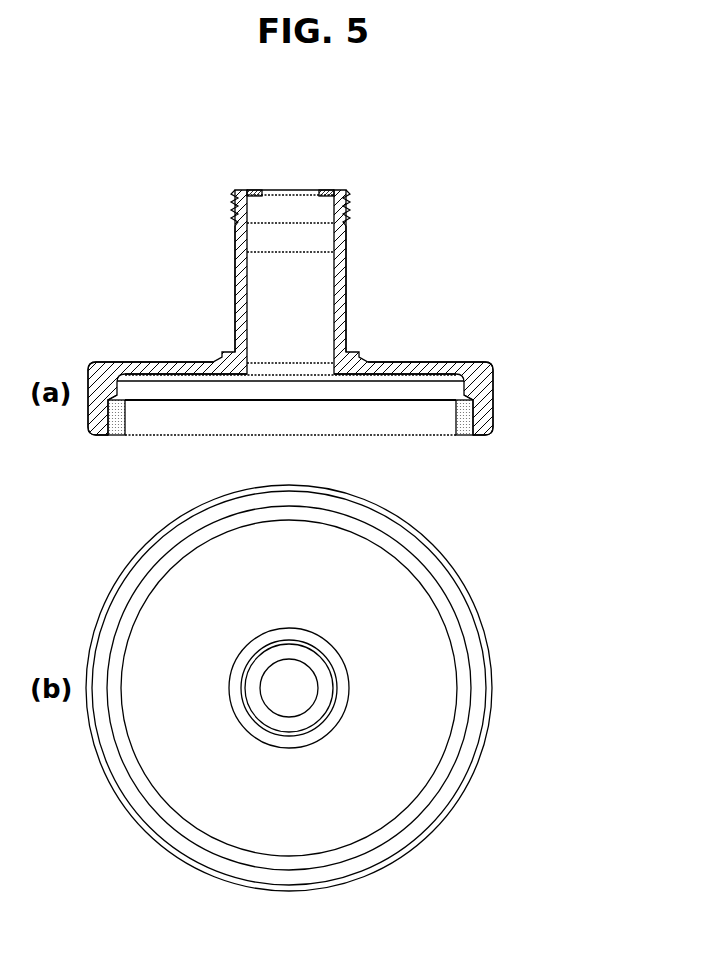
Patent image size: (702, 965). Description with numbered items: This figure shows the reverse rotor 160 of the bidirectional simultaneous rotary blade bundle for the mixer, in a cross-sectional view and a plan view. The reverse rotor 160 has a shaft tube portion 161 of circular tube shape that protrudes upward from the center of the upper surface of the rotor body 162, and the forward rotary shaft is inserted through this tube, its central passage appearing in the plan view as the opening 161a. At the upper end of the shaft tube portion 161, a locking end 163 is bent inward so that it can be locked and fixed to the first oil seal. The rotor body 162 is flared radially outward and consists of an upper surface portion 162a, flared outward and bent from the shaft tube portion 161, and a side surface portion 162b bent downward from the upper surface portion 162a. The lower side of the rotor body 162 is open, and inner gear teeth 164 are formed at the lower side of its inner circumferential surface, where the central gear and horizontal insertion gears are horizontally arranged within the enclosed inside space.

The reverse rotor 160 is at (226, 222).
The shaft tube portion 161 is at (348, 266).
The neck opening 161a is at (286, 700).
The rotor body 162 is at (527, 300).
The upper surface portion 162a is at (418, 361).
The side surface portion 162b is at (494, 400).
The locking end 163 is at (332, 189).
The inner gear teeth 164 is at (456, 415).